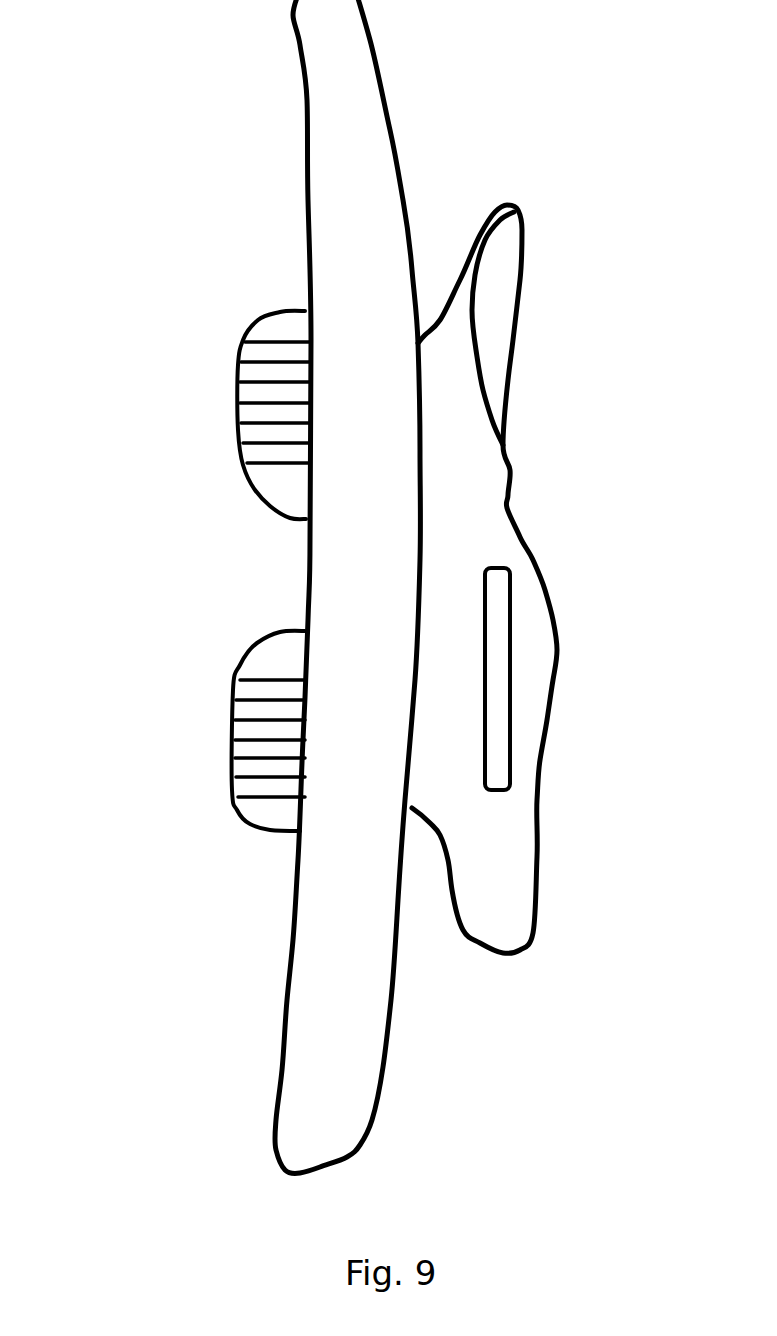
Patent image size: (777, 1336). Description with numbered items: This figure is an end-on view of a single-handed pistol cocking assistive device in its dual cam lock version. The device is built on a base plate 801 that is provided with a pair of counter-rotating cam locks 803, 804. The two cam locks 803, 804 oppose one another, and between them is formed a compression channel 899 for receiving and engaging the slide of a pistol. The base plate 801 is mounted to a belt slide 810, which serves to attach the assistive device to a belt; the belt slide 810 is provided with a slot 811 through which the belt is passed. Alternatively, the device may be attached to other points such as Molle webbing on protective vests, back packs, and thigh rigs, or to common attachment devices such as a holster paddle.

The base plate 801 is at (355, 964).
The cam lock 803 is at (253, 393).
The cam lock 804 is at (250, 747).
The belt slide 810 is at (498, 940).
The slot 811 is at (507, 622).
The compression channel 899 is at (278, 567).